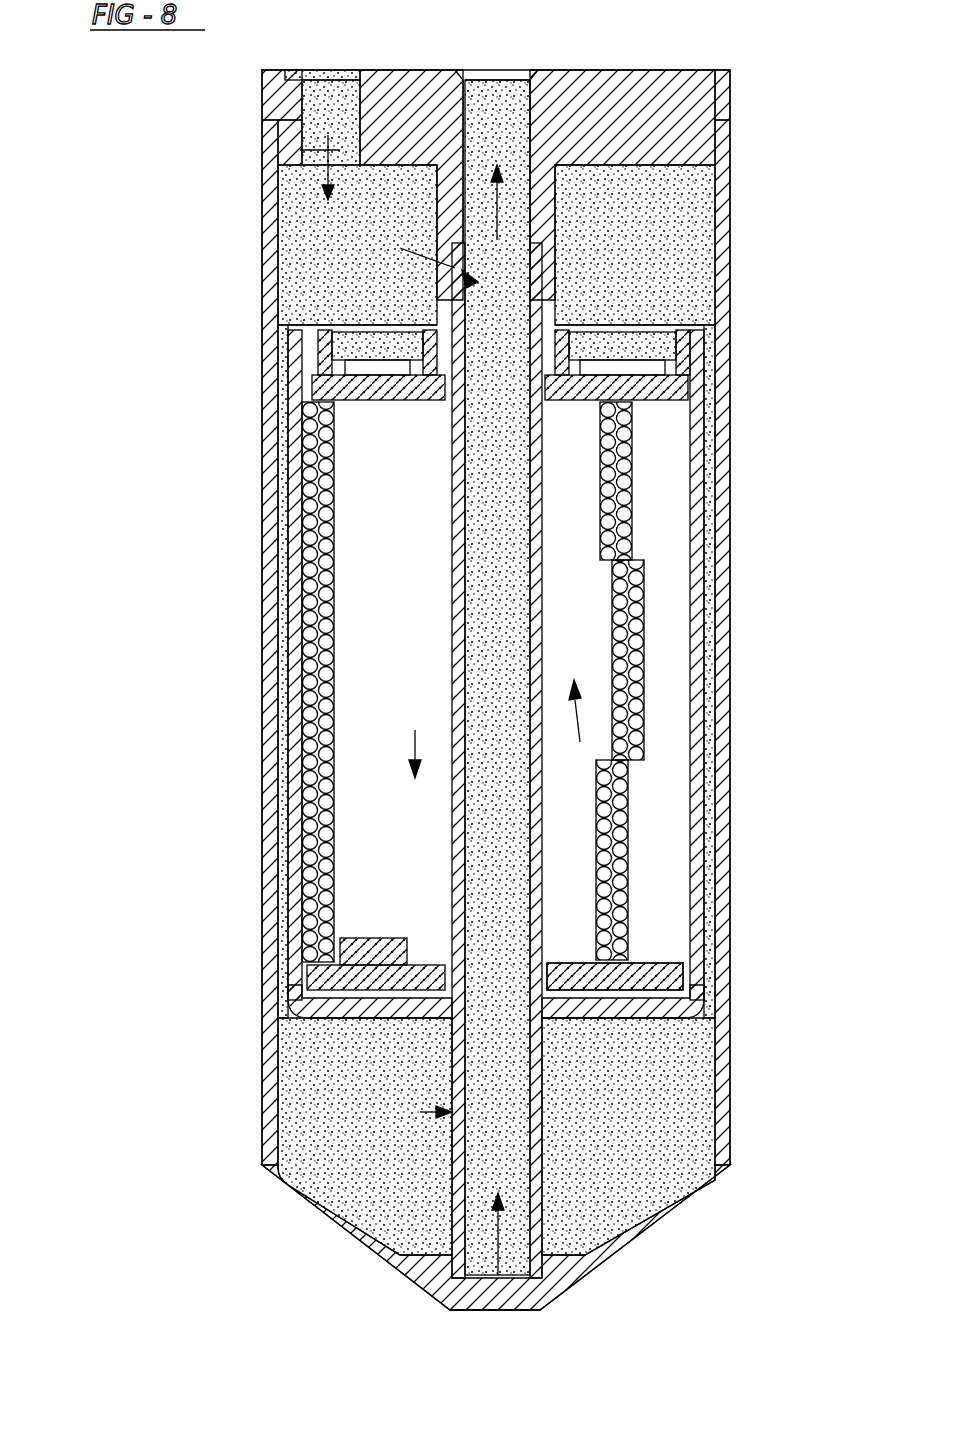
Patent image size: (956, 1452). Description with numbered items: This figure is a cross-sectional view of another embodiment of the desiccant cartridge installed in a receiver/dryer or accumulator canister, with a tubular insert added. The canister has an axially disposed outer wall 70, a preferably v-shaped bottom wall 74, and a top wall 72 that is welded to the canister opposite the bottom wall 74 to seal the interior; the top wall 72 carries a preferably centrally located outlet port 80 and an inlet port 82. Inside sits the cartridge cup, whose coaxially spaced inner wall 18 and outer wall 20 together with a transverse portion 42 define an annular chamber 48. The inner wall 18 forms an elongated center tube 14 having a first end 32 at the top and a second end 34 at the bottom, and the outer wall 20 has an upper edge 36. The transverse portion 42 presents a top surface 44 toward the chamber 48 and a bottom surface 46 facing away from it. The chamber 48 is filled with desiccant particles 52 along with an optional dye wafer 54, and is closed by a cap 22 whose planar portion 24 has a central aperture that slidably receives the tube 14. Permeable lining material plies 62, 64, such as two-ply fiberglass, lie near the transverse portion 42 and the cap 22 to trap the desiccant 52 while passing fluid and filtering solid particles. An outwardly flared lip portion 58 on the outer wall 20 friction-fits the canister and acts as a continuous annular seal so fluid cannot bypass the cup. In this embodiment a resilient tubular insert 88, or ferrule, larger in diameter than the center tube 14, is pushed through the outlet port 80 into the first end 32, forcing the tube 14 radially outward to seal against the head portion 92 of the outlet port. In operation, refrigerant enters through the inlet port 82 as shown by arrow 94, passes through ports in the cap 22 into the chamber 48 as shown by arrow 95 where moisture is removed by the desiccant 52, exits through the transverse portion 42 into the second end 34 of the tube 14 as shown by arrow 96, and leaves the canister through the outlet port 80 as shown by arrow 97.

The center tube 14 is at (470, 650).
The inner wall 18 is at (448, 615).
The outer wall 20 is at (690, 690).
The cap 22 is at (700, 315).
The planar portion 24 is at (705, 368).
The first end 32 is at (305, 295).
The second end 34 is at (418, 1110).
The upper edge 36 is at (705, 320).
The transverse portion 42 is at (380, 1018).
The top surface 44 is at (595, 960).
The bottom surface 46 is at (600, 1018).
The chamber 48 is at (575, 624).
The desiccant particles 52 is at (612, 505).
The dye wafer 54 is at (380, 936).
The flared lip portion 58 is at (283, 430).
The permeable lining material 62 is at (424, 960).
The permeable lining material 64 is at (393, 402).
The outer wall 70 is at (728, 215).
The top wall 72 is at (722, 86).
The bottom wall 74 is at (672, 1248).
The outlet port 80 is at (490, 95).
The inlet port 82 is at (345, 92).
The tubular insert 88 is at (419, 260).
The head portion 92 is at (555, 300).
The arrow 94 is at (300, 148).
The arrow 95 is at (415, 750).
The arrow 96 is at (470, 1215).
The arrow 97 is at (530, 140).